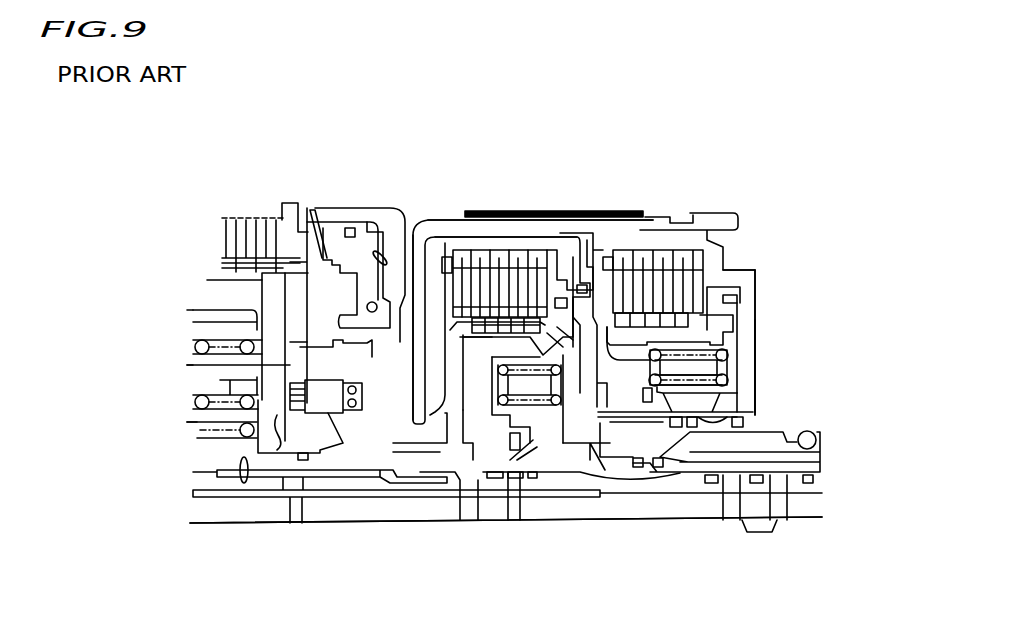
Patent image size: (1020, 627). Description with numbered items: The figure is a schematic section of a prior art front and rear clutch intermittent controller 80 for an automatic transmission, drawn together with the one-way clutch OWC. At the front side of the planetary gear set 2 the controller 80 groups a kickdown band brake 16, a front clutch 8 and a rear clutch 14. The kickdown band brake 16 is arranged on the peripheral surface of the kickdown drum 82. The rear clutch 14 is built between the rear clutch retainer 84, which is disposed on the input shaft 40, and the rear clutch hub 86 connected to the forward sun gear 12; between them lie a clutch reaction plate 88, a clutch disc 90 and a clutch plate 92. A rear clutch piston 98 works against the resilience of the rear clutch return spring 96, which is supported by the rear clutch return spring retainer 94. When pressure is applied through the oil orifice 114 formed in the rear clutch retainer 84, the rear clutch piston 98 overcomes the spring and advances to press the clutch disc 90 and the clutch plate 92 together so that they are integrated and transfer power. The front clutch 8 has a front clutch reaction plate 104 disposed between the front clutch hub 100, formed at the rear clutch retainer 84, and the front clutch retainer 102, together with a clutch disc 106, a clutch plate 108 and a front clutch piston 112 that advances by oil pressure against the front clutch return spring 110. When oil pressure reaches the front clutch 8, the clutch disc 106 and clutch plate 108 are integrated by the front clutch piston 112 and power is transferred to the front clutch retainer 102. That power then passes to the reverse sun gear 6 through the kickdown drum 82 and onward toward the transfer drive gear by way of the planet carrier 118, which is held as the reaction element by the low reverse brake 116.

The planetary gear set 2 is at (185, 377).
The reverse sun gear 6 is at (207, 456).
The front clutch 8 is at (656, 252).
The forward sun gear 12 is at (225, 468).
The rear clutch 14 is at (478, 352).
The kickdown band brake 16 is at (527, 215).
The input shaft 40 is at (687, 508).
The front and rear clutch intermittent controller 80 is at (740, 190).
The kickdown drum 82 is at (587, 225).
The rear clutch retainer 84 is at (600, 368).
The rear clutch hub 86 is at (452, 370).
The clutch reaction plate 88 is at (460, 290).
The clutch disc 90 is at (487, 273).
The clutch plate 92 is at (527, 290).
The rear clutch return spring retainer 94 is at (507, 395).
The rear clutch return spring 96 is at (538, 478).
The rear clutch piston 98 is at (680, 352).
The front clutch hub 100 is at (640, 328).
The front clutch retainer 102 is at (713, 275).
The front clutch reaction plate 104 is at (623, 283).
The clutch disc 106 is at (673, 290).
The clutch plate 108 is at (673, 290).
The front clutch return spring 110 is at (760, 382).
The front clutch piston 112 is at (733, 313).
The oil orifice 114 is at (585, 457).
The low reverse brake 116 is at (250, 240).
The planet carrier 118 is at (275, 335).
The one-way clutch OWC is at (328, 400).